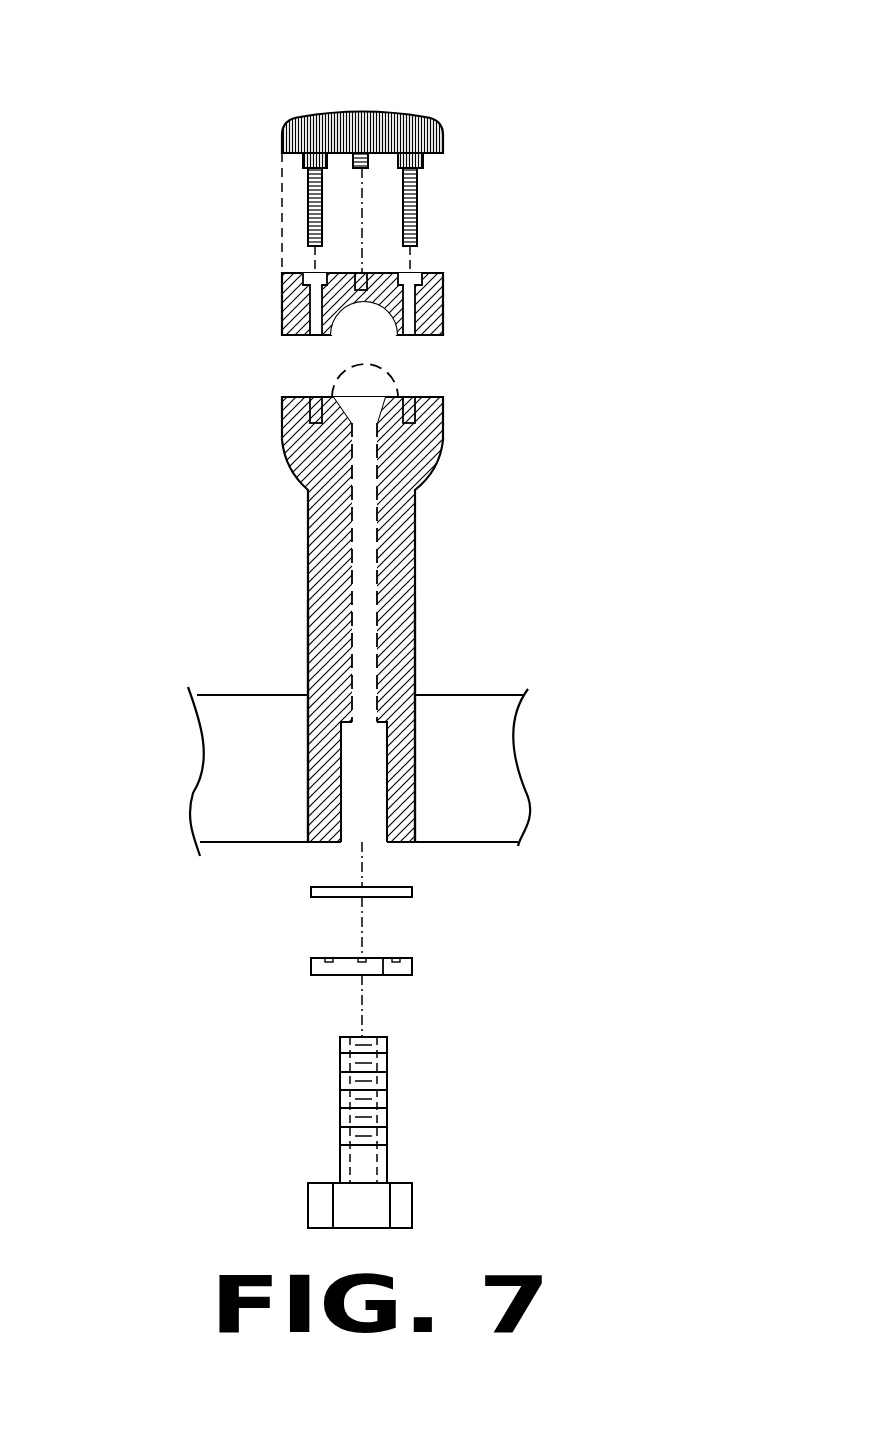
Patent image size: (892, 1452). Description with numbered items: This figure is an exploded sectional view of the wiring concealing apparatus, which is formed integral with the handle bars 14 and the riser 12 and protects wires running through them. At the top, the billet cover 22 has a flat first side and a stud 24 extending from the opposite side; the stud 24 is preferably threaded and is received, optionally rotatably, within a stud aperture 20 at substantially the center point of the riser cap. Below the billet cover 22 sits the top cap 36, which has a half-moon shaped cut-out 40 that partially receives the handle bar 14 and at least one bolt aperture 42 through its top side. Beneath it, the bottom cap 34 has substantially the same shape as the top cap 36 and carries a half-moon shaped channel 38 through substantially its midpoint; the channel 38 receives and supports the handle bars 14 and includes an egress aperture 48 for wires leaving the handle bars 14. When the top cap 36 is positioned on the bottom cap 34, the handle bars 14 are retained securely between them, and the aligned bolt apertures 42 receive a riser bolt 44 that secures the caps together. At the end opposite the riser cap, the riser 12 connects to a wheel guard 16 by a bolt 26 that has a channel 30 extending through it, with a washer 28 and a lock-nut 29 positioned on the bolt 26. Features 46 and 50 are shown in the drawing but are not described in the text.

The riser 12 is at (415, 530).
The handle bars 14 is at (334, 390).
The wheel guard 16 is at (520, 758).
The stud aperture 20 is at (366, 274).
The billet cover 22 is at (362, 113).
The stud 24 is at (302, 162).
The bolt 26 is at (387, 1095).
The washer 28 is at (393, 898).
The lock-nut 29 is at (393, 975).
The channel 30 is at (372, 1155).
The bottom cap 34 is at (420, 619).
The top cap 36 is at (281, 330).
The half-moon shaped channel 38 is at (300, 478).
The half-moon shaped cut-out 40 is at (343, 297).
The bolt aperture 42 is at (444, 276).
The riser bolt 44 is at (320, 235).
The ball seat cavity 46 is at (383, 403).
The egress aperture 48 is at (364, 430).
The counterbore 50 is at (366, 626).